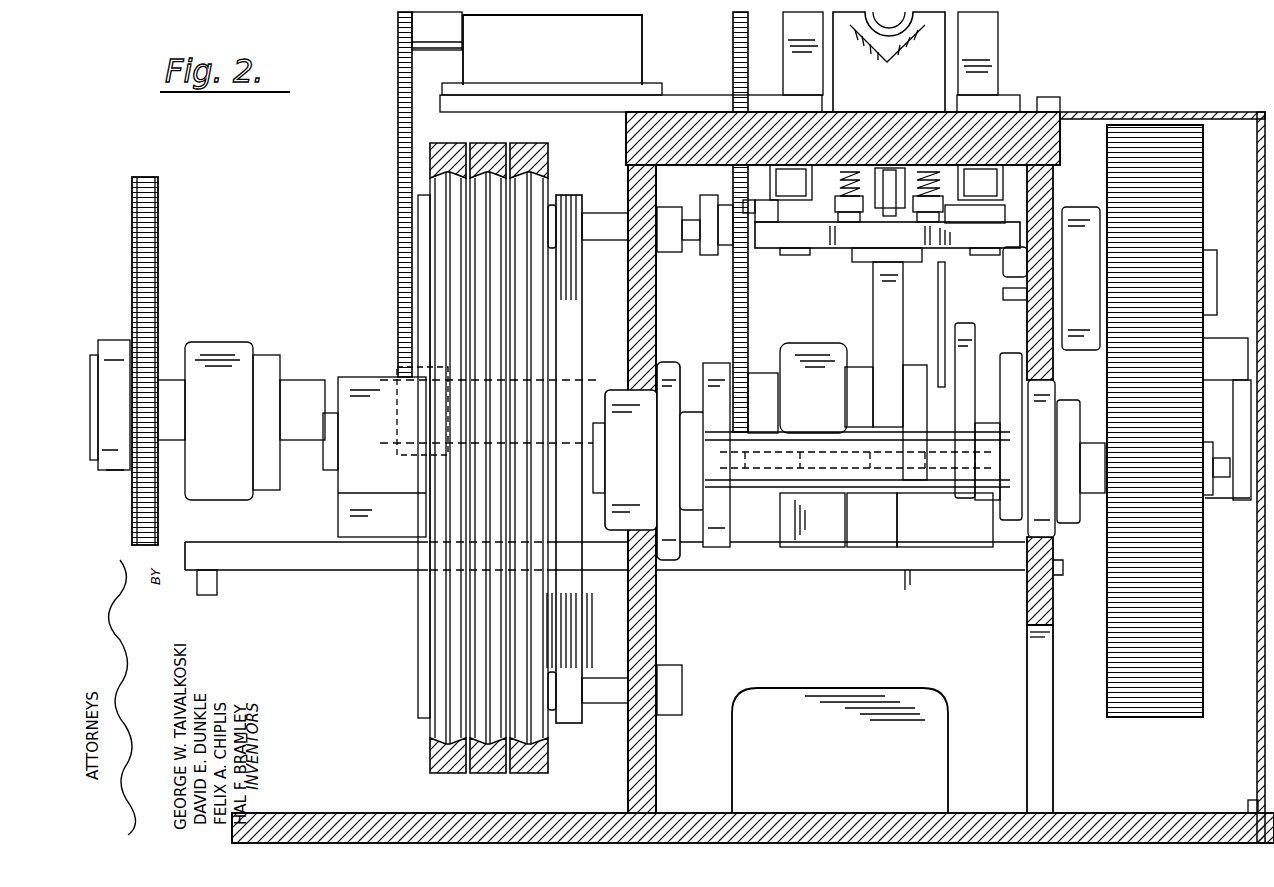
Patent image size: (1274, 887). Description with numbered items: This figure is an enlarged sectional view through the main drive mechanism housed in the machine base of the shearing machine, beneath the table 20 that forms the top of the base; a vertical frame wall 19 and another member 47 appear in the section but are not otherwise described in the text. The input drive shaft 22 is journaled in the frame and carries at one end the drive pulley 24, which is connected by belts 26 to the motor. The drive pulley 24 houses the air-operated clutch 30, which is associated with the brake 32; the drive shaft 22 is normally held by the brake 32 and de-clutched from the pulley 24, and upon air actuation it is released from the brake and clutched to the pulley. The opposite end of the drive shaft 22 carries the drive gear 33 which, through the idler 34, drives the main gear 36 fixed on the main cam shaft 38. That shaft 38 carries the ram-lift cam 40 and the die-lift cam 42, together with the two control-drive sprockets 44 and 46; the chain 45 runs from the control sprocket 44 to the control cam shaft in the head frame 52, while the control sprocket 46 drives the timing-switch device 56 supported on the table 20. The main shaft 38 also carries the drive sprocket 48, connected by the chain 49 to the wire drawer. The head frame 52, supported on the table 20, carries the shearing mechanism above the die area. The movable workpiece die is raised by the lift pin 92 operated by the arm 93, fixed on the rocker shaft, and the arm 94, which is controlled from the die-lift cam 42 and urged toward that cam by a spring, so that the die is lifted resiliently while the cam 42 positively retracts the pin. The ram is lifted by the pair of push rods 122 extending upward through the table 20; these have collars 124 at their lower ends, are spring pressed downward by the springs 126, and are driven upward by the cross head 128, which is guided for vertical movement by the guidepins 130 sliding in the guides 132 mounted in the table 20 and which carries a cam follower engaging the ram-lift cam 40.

The vertical frame wall 19 is at (646, 631).
The table 20 is at (822, 150).
The input drive shaft 22 is at (764, 470).
The drive pulley 24 is at (430, 748).
The belts 26 is at (462, 145).
The air-operated clutch 30 is at (412, 270).
The brake 32 is at (583, 300).
The drive gear 33 is at (1180, 543).
The idler 34 is at (1190, 204).
The main gear 36 is at (1183, 630).
The main cam shaft 38 is at (1246, 416).
The ram-lift cam 40 is at (880, 355).
The die-lift cam 42 is at (967, 325).
The control-drive sprocket 44 is at (745, 388).
The chain 45 is at (733, 295).
The control-drive sprocket 46 is at (404, 370).
The rack 47 is at (398, 190).
The drive sprocket 48 is at (148, 288).
The chain 49 is at (160, 220).
The head frame 52 is at (814, 80).
The timing-switch device 56 is at (546, 56).
The lift pin 92 is at (888, 166).
The arm 93 is at (887, 244).
The arm 94 is at (946, 338).
The push rods 122 is at (930, 168).
The collars 124 is at (938, 203).
The springs 126 is at (848, 170).
The cross head 128 is at (800, 245).
The guidepins 130 is at (785, 255).
The guides 132 is at (806, 194).